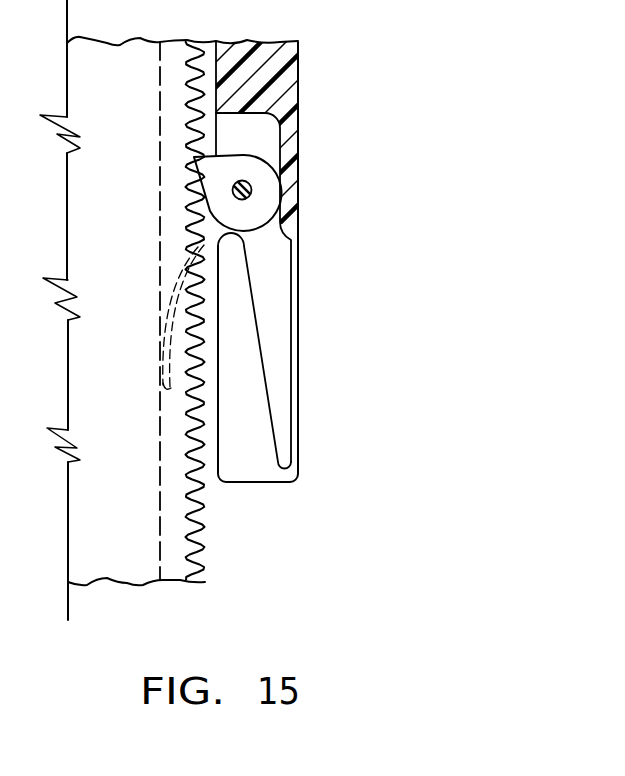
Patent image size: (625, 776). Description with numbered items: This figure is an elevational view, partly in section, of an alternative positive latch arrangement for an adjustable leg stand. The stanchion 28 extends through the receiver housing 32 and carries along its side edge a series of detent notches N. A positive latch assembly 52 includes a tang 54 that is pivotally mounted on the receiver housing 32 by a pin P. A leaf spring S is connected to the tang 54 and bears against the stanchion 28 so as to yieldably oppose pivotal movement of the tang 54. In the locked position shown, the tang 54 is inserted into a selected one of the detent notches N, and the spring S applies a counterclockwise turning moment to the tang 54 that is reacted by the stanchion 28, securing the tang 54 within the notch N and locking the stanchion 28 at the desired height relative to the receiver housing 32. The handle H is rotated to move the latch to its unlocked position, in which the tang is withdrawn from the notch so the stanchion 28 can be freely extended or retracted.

The stanchion 28 is at (104, 221).
The receiver housing 32 is at (299, 95).
The positive latch assembly 52 is at (328, 267).
The tang 54 is at (193, 156).
The pin P is at (253, 188).
The leaf spring S is at (199, 247).
The cam latch handle H is at (282, 363).
The detent notches N is at (193, 502).